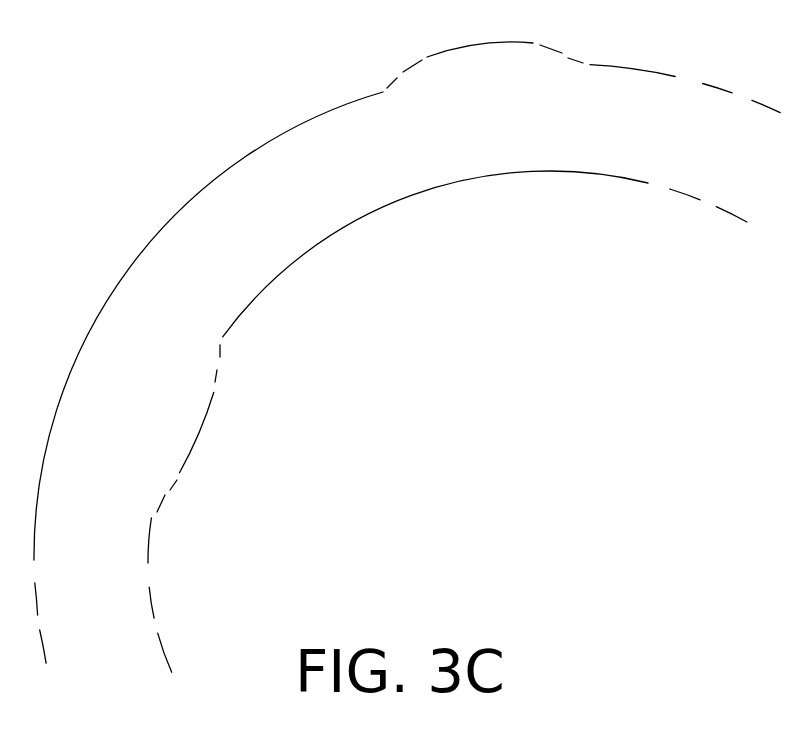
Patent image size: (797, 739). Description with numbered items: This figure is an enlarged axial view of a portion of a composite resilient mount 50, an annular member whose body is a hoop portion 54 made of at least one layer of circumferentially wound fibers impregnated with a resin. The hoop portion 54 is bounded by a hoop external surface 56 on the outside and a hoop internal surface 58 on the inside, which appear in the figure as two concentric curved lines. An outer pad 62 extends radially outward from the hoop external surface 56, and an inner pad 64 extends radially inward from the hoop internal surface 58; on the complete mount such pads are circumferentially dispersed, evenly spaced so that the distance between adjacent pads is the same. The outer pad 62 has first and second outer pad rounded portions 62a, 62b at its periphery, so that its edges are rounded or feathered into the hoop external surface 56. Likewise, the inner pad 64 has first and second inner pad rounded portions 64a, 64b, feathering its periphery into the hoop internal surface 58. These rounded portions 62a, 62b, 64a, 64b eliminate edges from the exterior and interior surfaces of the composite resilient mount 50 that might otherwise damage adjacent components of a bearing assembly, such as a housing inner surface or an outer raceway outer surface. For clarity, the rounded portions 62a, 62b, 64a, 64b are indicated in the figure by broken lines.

The composite resilient mount 50 is at (203, 118).
The hoop portion 54 is at (261, 243).
The hoop external surface 56 is at (145, 250).
The hoop internal surface 58 is at (287, 267).
The outer pad 62 is at (474, 46).
The first outer pad rounded portion 62a is at (389, 82).
The second outer pad rounded portion 62b is at (571, 57).
The inner pad 64 is at (200, 423).
The first inner pad rounded portion 64a is at (166, 497).
The second inner pad rounded portion 64b is at (222, 352).